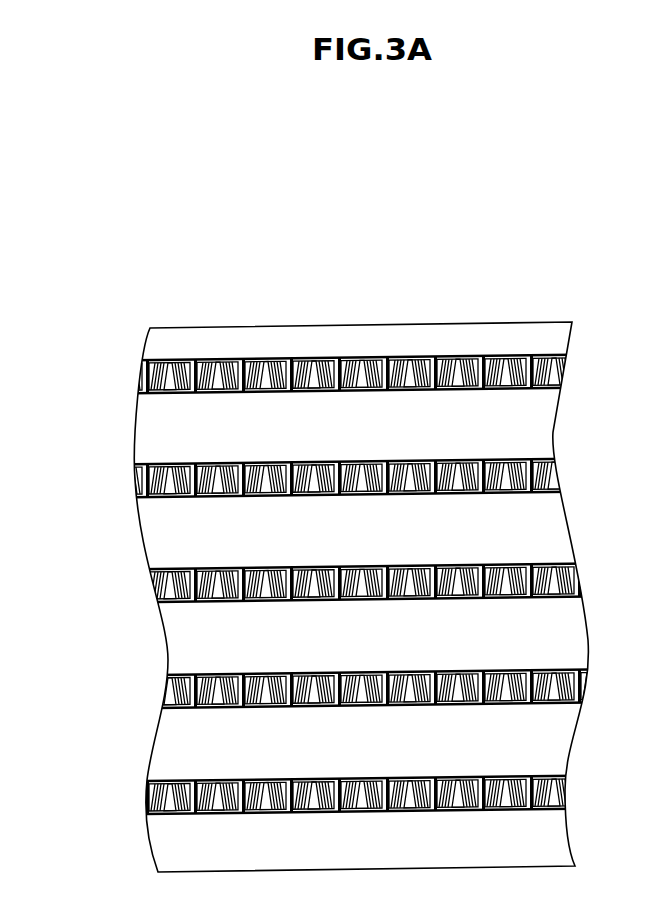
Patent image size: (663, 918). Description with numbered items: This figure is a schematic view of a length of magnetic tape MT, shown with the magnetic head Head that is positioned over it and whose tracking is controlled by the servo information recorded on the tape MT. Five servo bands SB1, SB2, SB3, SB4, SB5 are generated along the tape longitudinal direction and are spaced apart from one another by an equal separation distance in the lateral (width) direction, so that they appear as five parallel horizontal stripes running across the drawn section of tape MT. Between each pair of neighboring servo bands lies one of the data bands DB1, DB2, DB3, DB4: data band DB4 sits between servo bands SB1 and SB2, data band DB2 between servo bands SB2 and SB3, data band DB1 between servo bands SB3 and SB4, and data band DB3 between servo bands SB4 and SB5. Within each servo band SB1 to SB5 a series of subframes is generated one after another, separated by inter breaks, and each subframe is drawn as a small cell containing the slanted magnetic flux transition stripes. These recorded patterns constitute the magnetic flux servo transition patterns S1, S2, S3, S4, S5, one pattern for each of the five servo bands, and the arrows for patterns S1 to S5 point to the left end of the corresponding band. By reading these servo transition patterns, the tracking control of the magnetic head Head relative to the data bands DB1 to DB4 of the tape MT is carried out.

The magnetic tape MT is at (507, 335).
The magnetic head Head is at (643, 254).
The magnetic flux servo transition pattern S1 is at (138, 377).
The magnetic flux servo transition pattern S2 is at (135, 480).
The magnetic flux servo transition pattern S3 is at (156, 585).
The magnetic flux servo transition pattern S4 is at (165, 688).
The magnetic flux servo transition pattern S5 is at (145, 798).
The servo band SB1 is at (553, 374).
The servo band SB2 is at (553, 482).
The servo band SB3 is at (570, 585).
The servo band SB4 is at (582, 690).
The servo band SB5 is at (560, 795).
The data band DB1 is at (580, 635).
The data band DB2 is at (562, 533).
The data band DB3 is at (568, 737).
The data band DB4 is at (547, 428).